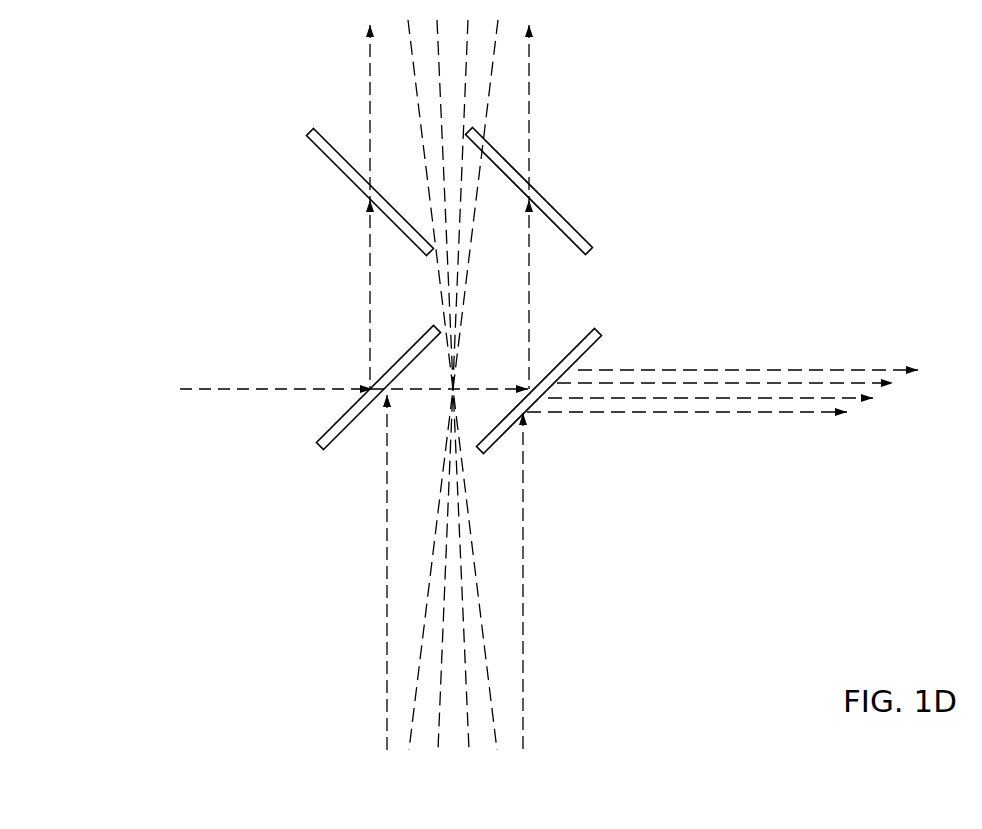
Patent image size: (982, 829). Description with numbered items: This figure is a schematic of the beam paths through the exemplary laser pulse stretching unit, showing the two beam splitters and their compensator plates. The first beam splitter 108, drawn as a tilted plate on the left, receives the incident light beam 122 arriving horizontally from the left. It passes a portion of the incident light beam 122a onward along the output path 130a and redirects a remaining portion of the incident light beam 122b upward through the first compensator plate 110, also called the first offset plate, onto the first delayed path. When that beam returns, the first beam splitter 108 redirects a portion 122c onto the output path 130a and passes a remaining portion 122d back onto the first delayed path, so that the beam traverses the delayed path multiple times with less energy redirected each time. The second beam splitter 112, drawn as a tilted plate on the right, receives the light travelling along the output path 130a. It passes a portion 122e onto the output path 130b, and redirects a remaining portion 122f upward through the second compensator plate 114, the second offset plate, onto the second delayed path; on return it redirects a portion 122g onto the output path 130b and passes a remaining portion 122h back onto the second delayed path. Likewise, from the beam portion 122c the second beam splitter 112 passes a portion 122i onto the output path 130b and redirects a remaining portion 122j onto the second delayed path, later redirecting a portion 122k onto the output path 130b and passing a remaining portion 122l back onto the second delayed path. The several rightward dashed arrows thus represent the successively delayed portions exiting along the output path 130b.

The first beam splitter 108 is at (318, 448).
The first compensator plate 110 is at (313, 130).
The second beam splitter 112 is at (598, 333).
The second compensator plate 114 is at (556, 210).
The incident light beam 122 is at (212, 392).
The portion of the incident light beam 122a is at (505, 436).
The remaining portion of the incident light beam 122b is at (386, 703).
The portion of the incident light beam that traversed the first delayed path 122c is at (483, 392).
The remaining portion of the incident light beam that traversed the first delayed pa 122d is at (370, 64).
The portion of the incident light beam that traversed the output path 122e is at (862, 370).
The remaining portion of the incident light beam 122f is at (523, 697).
The portion of the incident light beam that traversed the second delayed path 122g is at (758, 383).
The remaining portion of the incident light beam that traversed the second delayed p 122h is at (530, 246).
The portion of the incident light beam 122i is at (742, 398).
The remaining portion of the incident light beam 122j is at (635, 207).
The portion of the incident light beam that traversed the second delayed path 122k is at (805, 412).
The remaining portion of the incident light beam that traversed the second delayed p 122l is at (529, 64).
The output path 130a is at (413, 403).
The output path 130b is at (670, 439).